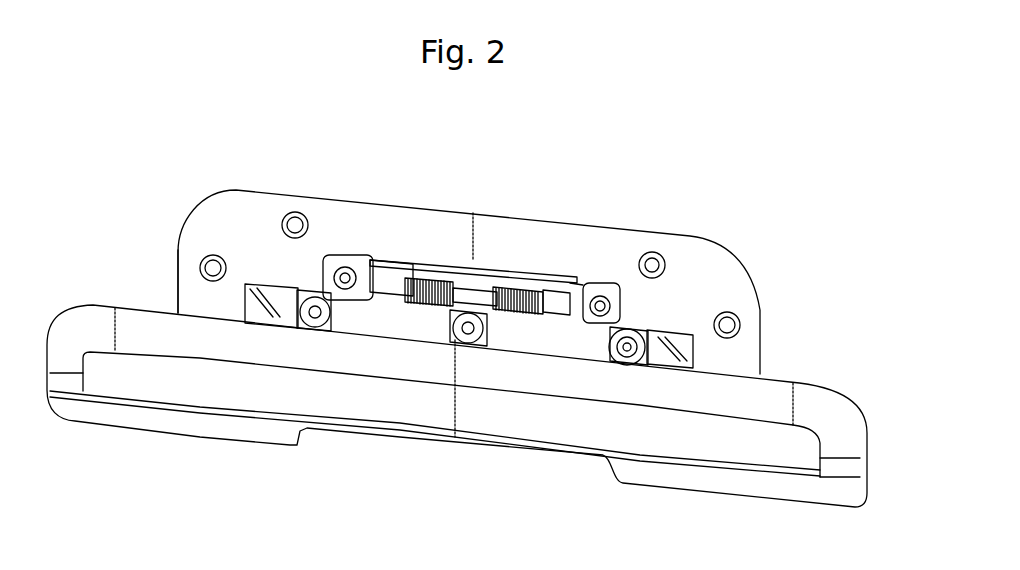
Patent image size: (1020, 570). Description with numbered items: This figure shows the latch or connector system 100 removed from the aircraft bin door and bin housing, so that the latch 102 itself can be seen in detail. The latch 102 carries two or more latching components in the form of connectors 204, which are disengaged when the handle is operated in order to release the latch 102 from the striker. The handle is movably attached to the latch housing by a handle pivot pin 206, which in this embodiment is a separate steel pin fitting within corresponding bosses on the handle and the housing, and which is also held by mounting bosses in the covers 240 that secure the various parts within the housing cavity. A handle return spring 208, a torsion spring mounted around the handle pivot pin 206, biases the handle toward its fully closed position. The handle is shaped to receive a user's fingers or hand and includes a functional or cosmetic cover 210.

The latch or connector system 100 is at (764, 190).
The latch 102 is at (242, 233).
The connectors 204 is at (276, 317).
The handle pivot pin 206 is at (477, 290).
The handle return spring 208 is at (443, 282).
The cover 210 is at (253, 410).
The covers 240 is at (572, 340).